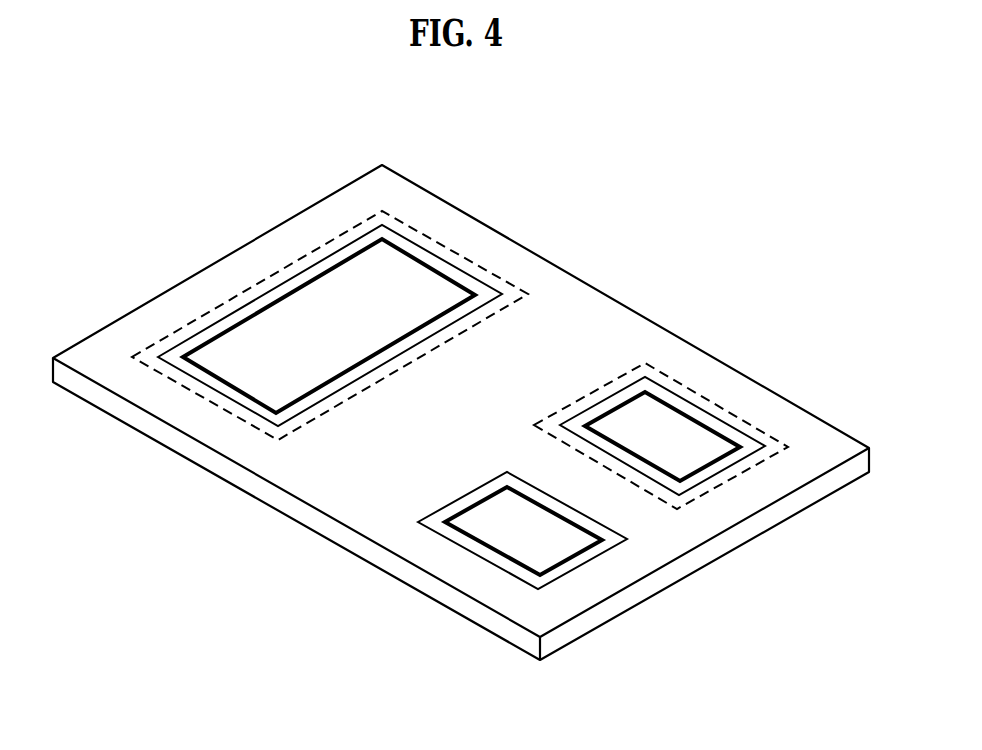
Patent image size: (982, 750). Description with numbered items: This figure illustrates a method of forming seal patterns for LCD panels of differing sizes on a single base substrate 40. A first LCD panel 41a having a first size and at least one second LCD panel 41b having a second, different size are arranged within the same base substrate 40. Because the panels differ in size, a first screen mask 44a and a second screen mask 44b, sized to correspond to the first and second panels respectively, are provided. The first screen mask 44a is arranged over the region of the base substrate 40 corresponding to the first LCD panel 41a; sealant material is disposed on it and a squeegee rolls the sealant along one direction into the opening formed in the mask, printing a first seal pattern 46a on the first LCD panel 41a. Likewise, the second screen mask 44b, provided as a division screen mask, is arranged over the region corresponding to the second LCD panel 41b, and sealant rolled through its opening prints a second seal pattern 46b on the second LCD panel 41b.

The base substrate 40 is at (683, 535).
The first LCD panel 41a is at (290, 279).
The second LCD panel 41b is at (735, 429).
The first screen mask 44a is at (337, 238).
The second screen mask 44b is at (683, 384).
The first seal pattern 46a is at (243, 320).
The second seal pattern 46b is at (722, 458).